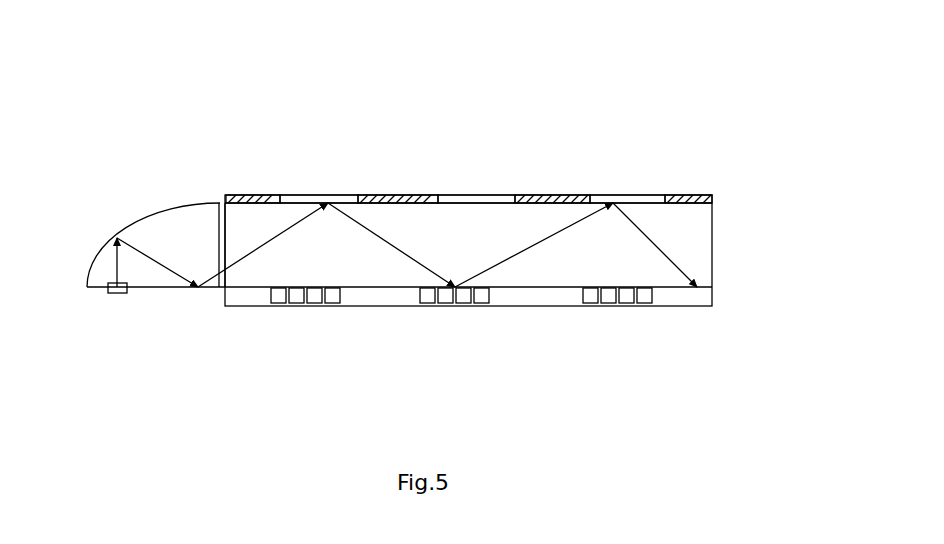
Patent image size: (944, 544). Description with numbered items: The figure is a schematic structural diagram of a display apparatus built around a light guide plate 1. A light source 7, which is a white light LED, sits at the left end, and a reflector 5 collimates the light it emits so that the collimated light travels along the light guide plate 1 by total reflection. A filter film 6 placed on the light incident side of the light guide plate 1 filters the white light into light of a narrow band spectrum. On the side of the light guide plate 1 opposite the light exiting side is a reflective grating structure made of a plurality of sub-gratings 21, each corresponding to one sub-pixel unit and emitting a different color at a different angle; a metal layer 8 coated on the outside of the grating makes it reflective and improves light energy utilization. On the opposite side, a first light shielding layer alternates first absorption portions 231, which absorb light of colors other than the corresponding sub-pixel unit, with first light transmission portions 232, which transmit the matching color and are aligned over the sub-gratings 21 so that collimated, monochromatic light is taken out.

The light guide plate 1 is at (712, 247).
The reflector 5 is at (172, 206).
The filter film 6 is at (221, 290).
The light source 7 is at (123, 293).
The metal layer 8 is at (712, 297).
The sub-gratings 21 is at (595, 301).
The first absorption portions 231 is at (256, 200).
The first light transmission portions 232 is at (316, 201).